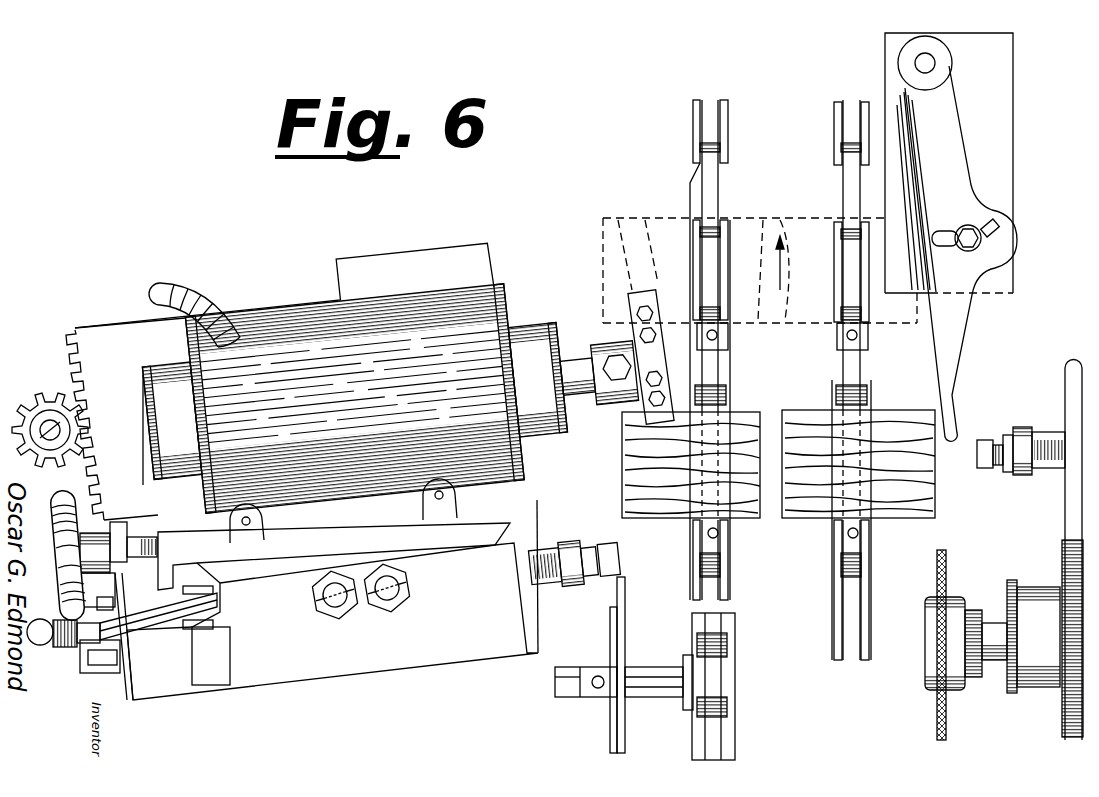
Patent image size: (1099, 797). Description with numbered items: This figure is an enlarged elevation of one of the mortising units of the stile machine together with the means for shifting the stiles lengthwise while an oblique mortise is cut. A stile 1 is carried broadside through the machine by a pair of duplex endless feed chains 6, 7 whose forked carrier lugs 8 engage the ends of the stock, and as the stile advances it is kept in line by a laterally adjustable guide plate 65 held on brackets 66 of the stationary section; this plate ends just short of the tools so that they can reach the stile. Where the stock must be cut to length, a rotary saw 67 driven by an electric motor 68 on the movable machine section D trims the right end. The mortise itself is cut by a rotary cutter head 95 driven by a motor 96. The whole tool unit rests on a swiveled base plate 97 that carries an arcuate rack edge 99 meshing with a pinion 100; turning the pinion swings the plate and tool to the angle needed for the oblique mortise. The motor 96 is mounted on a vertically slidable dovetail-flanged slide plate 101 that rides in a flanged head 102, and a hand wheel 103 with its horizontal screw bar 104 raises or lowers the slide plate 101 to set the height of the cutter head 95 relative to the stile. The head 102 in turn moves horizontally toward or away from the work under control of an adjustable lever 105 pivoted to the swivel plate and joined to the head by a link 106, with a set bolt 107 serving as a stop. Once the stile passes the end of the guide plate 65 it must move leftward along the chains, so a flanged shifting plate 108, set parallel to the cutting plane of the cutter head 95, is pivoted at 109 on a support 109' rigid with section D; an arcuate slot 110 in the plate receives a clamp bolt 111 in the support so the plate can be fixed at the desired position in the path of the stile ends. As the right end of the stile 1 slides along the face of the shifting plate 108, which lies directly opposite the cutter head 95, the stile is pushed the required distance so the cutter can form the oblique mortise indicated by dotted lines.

The stile 1 is at (805, 505).
The feed chain 6 is at (713, 188).
The feed chain 7 is at (848, 171).
The carrier lug 8 is at (848, 343).
The guide plate 65 is at (620, 637).
The bracket 66 is at (578, 690).
The rotary saw 67 is at (946, 568).
The electric motor 68 is at (1034, 592).
The rotary cutter head 95 is at (632, 302).
The motor 96 is at (358, 386).
The swiveled base plate 97 is at (118, 340).
The arcuate rack edge 99 is at (80, 342).
The pinion 100 is at (46, 410).
The slide plate 101 is at (290, 542).
The flanged head 102 is at (332, 600).
The hand wheel 103 is at (66, 558).
The screw bar 104 is at (147, 535).
The adjustable lever 105 is at (78, 647).
The link 106 is at (158, 627).
The set bolt 107 is at (604, 553).
The shifting plate 108 is at (940, 352).
The pivot 109 is at (954, 63).
The support 109' is at (974, 163).
The arcuate slot 110 is at (982, 243).
The clamp bolt 111 is at (997, 221).
The movable machine section D is at (1072, 488).